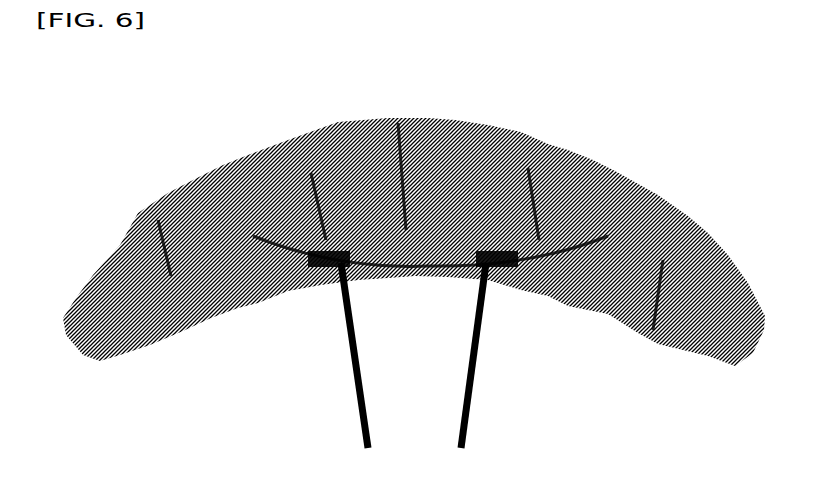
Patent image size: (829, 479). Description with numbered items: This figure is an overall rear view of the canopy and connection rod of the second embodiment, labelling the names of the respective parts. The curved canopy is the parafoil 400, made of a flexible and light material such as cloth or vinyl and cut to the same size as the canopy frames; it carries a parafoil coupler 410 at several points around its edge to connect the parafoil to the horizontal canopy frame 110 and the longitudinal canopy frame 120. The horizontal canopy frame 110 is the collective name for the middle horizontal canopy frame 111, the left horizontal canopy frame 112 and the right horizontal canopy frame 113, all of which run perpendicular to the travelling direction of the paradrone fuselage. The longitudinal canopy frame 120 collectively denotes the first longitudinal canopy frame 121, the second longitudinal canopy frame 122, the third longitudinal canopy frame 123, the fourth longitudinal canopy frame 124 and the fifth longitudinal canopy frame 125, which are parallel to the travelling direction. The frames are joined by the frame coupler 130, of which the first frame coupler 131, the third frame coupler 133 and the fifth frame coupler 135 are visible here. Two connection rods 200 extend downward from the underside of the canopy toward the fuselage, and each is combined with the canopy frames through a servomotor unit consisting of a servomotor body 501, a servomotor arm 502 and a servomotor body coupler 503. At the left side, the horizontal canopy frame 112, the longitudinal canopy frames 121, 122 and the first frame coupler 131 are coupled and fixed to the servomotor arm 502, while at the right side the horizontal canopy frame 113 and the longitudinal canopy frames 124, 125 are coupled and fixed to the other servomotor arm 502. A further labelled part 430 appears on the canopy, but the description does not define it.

The horizontal canopy frame 110 is at (112, 74).
The middle horizontal canopy frame 111 is at (360, 270).
The left horizontal canopy frame 112 is at (118, 233).
The right horizontal canopy frame 113 is at (600, 305).
The longitudinal canopy frame 120 is at (148, 90).
The first longitudinal canopy frame 121 is at (196, 322).
The second longitudinal canopy frame 122 is at (263, 284).
The third longitudinal canopy frame 123 is at (400, 269).
The fourth longitudinal canopy frame 124 is at (542, 148).
The fifth longitudinal canopy frame 125 is at (686, 240).
The frame coupler 130 is at (148, 107).
The first frame coupler 131 is at (205, 314).
The third frame coupler 133 is at (380, 158).
The fifth frame coupler 135 is at (598, 308).
The connection rod 200 is at (460, 373).
The parafoil 400 is at (90, 264).
The parafoil coupler 410 is at (680, 208).
The connecting portion 430 is at (252, 150).
The servomotor body 501 is at (332, 274).
The servomotor arm 502 is at (204, 302).
The servomotor body coupler 503 is at (518, 280).